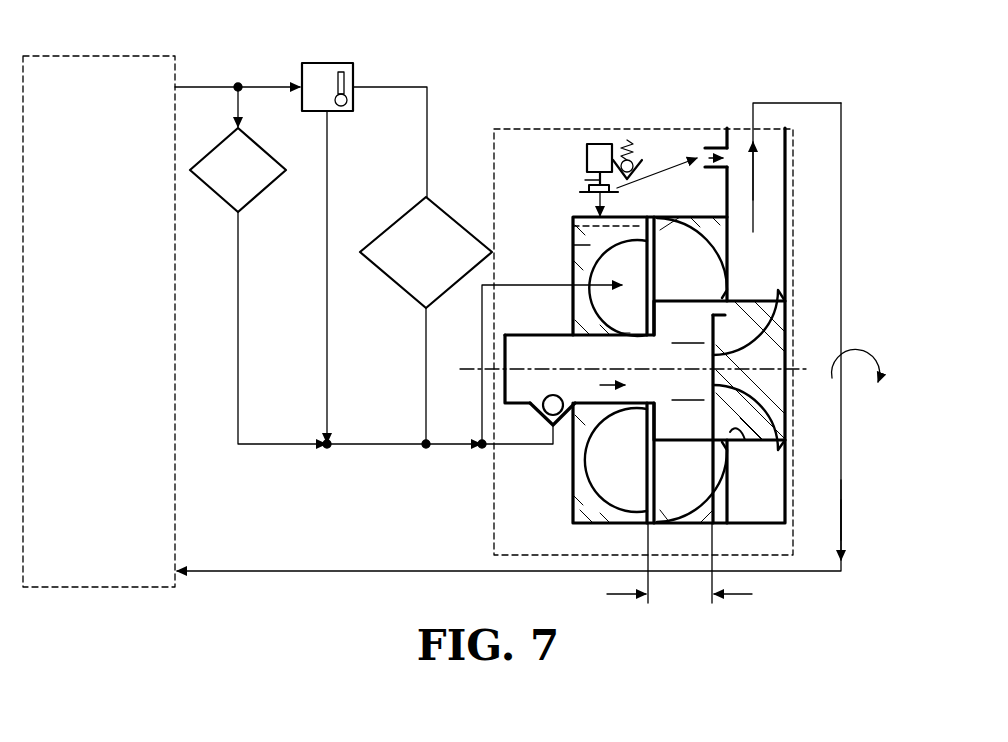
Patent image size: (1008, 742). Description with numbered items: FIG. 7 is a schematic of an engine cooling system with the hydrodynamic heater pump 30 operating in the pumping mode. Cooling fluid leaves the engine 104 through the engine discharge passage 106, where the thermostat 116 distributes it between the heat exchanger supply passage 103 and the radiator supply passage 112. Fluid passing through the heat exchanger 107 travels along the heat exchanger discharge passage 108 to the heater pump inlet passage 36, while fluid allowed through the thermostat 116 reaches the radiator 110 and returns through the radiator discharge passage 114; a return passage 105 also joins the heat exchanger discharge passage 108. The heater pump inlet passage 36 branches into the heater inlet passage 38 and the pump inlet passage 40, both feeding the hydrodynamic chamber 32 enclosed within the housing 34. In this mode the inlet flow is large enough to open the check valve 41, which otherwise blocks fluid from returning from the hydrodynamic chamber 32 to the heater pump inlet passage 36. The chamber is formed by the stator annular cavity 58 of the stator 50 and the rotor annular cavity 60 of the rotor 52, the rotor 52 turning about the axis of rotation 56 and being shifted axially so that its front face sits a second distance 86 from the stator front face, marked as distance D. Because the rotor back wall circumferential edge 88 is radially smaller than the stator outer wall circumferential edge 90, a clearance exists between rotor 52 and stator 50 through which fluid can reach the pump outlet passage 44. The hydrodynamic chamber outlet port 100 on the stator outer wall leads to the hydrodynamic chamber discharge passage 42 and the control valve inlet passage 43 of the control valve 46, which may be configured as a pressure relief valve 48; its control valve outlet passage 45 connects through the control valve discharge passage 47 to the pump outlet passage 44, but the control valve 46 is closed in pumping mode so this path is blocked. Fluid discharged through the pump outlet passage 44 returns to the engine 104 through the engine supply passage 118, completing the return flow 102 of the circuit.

The hydrodynamic heater pump 30 is at (668, 98).
The hydrodynamic chamber 32 is at (727, 222).
The housing 34 is at (800, 273).
The heater pump inlet passage 36 is at (435, 448).
The heater inlet passage 38 is at (517, 285).
The pump inlet passage 40 is at (505, 448).
The check valve 41 is at (540, 414).
The hydrodynamic chamber discharge passage 42 is at (618, 216).
The control valve inlet passage 43 is at (592, 206).
The pump outlet passage 44 is at (787, 160).
The control valve outlet passage 45 is at (588, 178).
The control valve 46 is at (600, 142).
The control valve discharge passage 47 is at (657, 166).
The pressure relief valve 48 is at (628, 140).
The stator 50 is at (572, 474).
The rotor 52 is at (795, 398).
The axis of rotation 56 is at (810, 368).
The stator annular cavity 58 is at (618, 288).
The rotor annular cavity 60 is at (692, 258).
The second distance 86 is at (735, 596).
The rotor back wall circumferential edge 88 is at (748, 440).
The stator outer wall circumferential edge 90 is at (740, 468).
The hydrodynamic chamber outlet port 100 is at (573, 226).
The return flow 102 is at (257, 542).
The heat exchanger supply passage 103 is at (235, 103).
The engine 104 is at (102, 587).
The return passage 105 is at (328, 319).
The engine discharge passage 106 is at (200, 87).
The heat exchanger 107 is at (262, 191).
The heat exchanger discharge passage 108 is at (239, 365).
The radiator 110 is at (395, 223).
The radiator supply passage 112 is at (430, 110).
The radiator discharge passage 114 is at (426, 343).
The thermostat 116 is at (333, 112).
The engine supply passage 118 is at (842, 512).